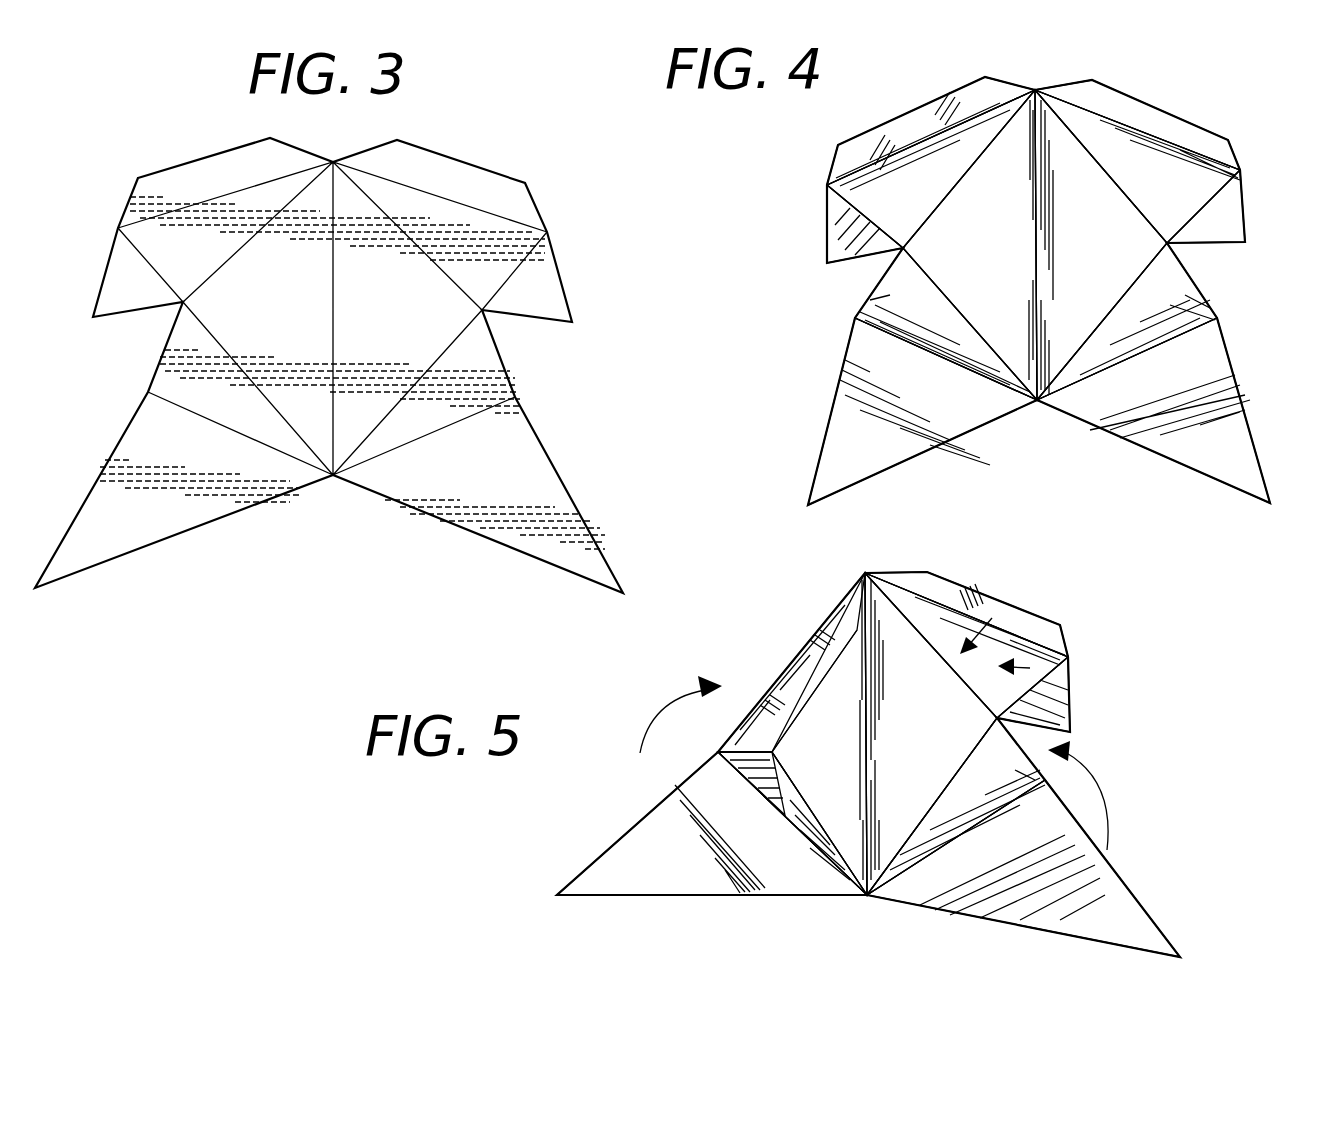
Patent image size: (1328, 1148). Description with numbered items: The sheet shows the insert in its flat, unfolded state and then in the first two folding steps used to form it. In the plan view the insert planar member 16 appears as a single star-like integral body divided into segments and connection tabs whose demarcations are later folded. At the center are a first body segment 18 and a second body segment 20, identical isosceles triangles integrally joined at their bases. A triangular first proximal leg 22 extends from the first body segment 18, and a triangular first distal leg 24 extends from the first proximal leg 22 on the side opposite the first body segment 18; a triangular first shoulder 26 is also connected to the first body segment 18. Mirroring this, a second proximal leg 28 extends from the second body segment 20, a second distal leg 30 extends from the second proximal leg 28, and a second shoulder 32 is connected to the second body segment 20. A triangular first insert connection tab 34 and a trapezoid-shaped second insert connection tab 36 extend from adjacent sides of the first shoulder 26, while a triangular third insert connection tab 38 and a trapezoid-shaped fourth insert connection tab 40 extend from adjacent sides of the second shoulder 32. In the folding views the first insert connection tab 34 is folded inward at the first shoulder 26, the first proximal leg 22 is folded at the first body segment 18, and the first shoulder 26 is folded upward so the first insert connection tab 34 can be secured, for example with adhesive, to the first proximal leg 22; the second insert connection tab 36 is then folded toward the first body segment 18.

In FIG. 3, the insert planar member 16 is at (458, 160).
In FIG. 4, the first body segment 18 is at (972, 242).
In FIG. 5, the first body segment 18 is at (811, 774).
In FIG. 4, the second body segment 20 is at (1071, 244).
In FIG. 5, the second body segment 20 is at (902, 741).
In FIG. 4, the first proximal leg 22 is at (900, 283).
In FIG. 5, the first proximal leg 22 is at (827, 850).
In FIG. 4, the first distal leg 24 is at (852, 458).
In FIG. 5, the first distal leg 24 is at (640, 862).
In FIG. 4, the first shoulder 26 is at (885, 195).
In FIG. 4, the second proximal leg 28 is at (1175, 278).
In FIG. 5, the second proximal leg 28 is at (1000, 747).
In FIG. 4, the second distal leg 30 is at (1210, 453).
In FIG. 5, the second distal leg 30 is at (1110, 910).
In FIG. 4, the second shoulder 32 is at (1162, 172).
In FIG. 5, the second shoulder 32 is at (992, 653).
In FIG. 4, the first insert connection tab 34 is at (840, 212).
In FIG. 5, the first insert connection tab 34 is at (757, 777).
In FIG. 4, the second insert connection tab 36 is at (895, 128).
In FIG. 5, the second insert connection tab 36 is at (800, 662).
In FIG. 4, the third insert connection tab 38 is at (1230, 212).
In FIG. 5, the third insert connection tab 38 is at (1057, 678).
In FIG. 4, the fourth insert connection tab 40 is at (1113, 107).
In FIG. 5, the fourth insert connection tab 40 is at (1005, 612).